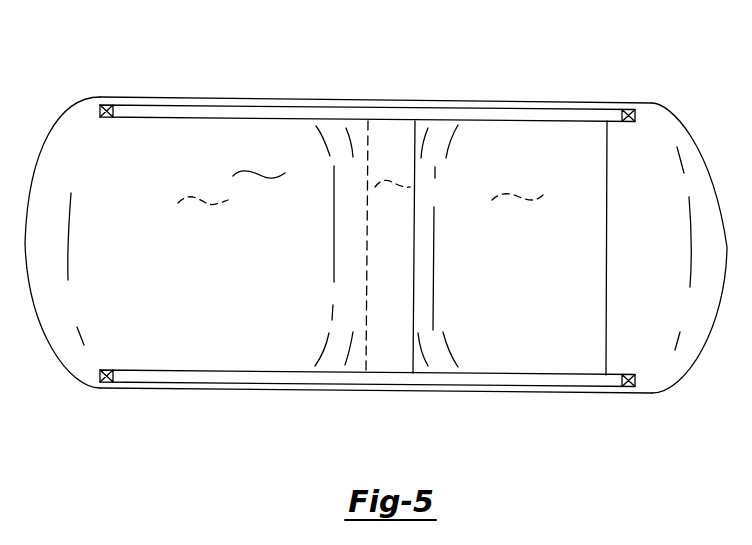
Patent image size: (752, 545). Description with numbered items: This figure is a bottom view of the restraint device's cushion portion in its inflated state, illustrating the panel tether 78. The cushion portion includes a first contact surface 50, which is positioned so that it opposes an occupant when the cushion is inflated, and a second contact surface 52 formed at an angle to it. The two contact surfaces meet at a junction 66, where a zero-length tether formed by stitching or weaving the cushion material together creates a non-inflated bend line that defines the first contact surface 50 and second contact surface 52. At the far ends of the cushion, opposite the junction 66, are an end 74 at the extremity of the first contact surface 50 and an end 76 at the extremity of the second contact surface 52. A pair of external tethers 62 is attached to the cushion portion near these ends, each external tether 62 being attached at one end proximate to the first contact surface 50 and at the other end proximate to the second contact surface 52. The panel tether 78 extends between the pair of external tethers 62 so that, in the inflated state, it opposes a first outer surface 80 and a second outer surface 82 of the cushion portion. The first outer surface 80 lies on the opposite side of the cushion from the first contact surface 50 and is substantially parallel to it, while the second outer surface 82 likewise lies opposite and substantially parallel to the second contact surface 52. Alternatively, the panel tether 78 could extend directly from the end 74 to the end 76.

The first contact surface 50 is at (203, 195).
The second contact surface 52 is at (521, 195).
The external tether 62 is at (533, 115).
The junction 66 is at (365, 297).
The end 74 is at (40, 170).
The end 76 is at (690, 146).
The panel tether 78 is at (481, 165).
The first outer surface 80 is at (261, 175).
The second outer surface 82 is at (398, 178).